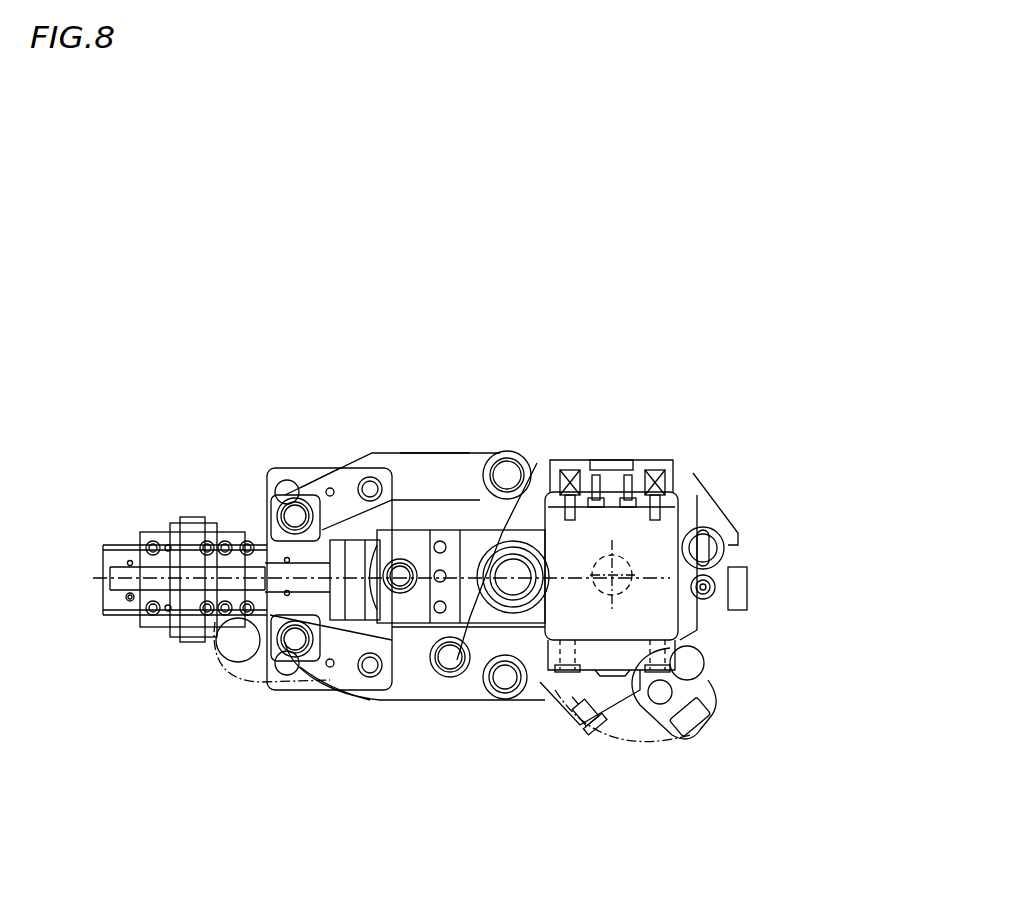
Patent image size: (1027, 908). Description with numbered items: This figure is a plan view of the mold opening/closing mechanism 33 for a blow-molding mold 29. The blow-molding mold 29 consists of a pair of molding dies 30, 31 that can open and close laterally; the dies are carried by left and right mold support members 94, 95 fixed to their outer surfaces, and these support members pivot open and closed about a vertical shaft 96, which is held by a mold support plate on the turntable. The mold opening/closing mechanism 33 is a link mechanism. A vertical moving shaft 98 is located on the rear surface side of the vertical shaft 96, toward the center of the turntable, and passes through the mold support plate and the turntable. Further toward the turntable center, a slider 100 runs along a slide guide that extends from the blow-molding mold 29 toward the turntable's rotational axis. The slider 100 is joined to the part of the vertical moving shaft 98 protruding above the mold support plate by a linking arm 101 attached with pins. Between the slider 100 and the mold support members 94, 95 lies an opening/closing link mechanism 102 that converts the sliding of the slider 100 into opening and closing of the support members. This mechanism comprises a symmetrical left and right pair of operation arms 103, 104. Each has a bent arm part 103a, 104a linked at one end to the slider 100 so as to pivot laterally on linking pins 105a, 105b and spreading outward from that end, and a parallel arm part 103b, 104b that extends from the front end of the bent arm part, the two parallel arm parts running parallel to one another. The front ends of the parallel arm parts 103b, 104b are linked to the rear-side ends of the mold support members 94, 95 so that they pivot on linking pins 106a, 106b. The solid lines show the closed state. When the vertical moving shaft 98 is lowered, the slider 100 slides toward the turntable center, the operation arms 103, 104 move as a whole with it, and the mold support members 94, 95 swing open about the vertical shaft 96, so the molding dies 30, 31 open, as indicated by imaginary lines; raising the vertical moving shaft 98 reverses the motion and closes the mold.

The blow-molding mold 29 is at (818, 517).
The molding die 30 is at (652, 543).
The molding die 31 is at (678, 665).
The mold opening/closing mechanism 33 is at (637, 330).
The mold support member 94 is at (682, 487).
The mold support member 95 is at (693, 627).
The vertical shaft 96 is at (548, 678).
The vertical moving shaft 98 is at (425, 640).
The slider 100 is at (225, 612).
The linking arm 101 is at (283, 640).
The opening/closing link mechanism 102 is at (371, 398).
The operation arm 103 is at (393, 442).
The bent arm part 103a is at (338, 470).
The parallel arm part 103b is at (428, 466).
The operation arm 104 is at (375, 712).
The bent arm part 104a is at (343, 677).
The parallel arm part 104b is at (470, 680).
The linking pin 105a is at (296, 515).
The linking pin 105b is at (298, 655).
The linking pin 106a is at (507, 475).
The linking pin 106b is at (507, 683).